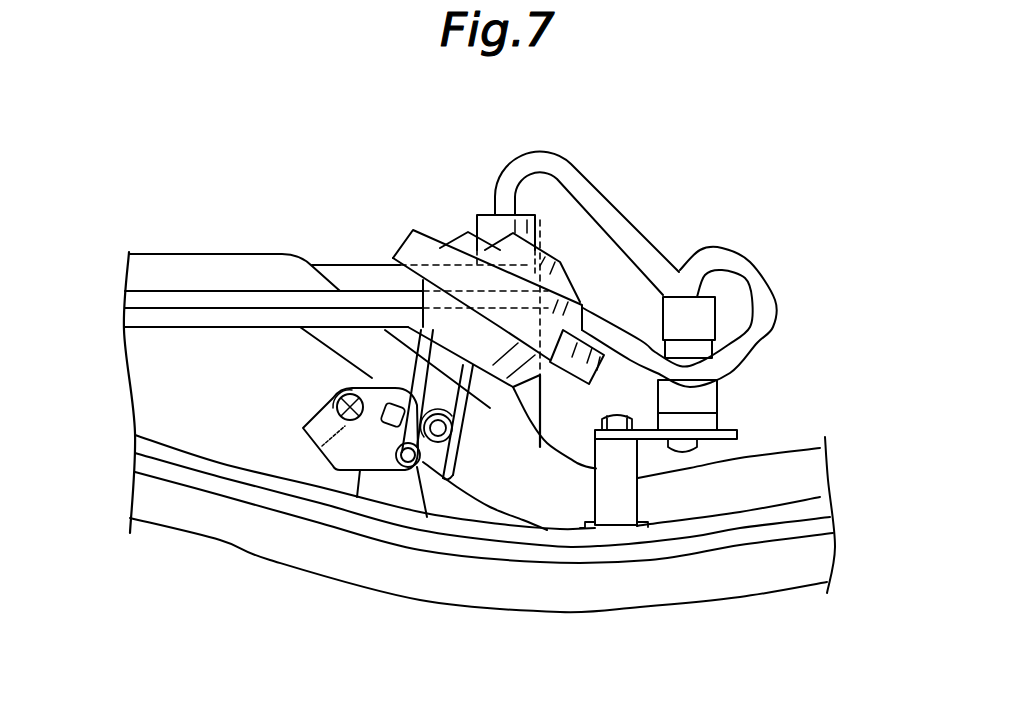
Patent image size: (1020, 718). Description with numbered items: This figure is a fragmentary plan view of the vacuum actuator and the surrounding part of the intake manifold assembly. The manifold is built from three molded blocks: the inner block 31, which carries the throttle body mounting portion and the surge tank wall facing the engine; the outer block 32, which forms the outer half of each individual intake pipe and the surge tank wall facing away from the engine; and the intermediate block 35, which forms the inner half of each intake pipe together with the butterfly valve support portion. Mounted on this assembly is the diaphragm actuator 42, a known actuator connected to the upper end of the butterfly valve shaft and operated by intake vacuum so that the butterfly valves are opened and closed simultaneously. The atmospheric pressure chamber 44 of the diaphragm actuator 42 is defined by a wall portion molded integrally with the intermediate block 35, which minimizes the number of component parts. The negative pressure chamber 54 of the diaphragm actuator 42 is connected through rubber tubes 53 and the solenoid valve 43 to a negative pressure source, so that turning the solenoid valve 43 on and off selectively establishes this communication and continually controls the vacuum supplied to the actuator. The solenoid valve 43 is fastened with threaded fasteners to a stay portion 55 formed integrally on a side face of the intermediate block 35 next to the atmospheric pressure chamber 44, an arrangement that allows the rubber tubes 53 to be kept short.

The inner block 31 is at (200, 254).
The outer block 32 is at (425, 598).
The intermediate block 35 is at (543, 428).
The diaphragm actuator 42 is at (450, 240).
The solenoid valve 43 is at (718, 392).
The atmospheric pressure chamber 44 is at (420, 300).
The rubber tubes 53 is at (727, 258).
The negative pressure chamber 54 is at (565, 292).
The stay portion 55 is at (628, 516).